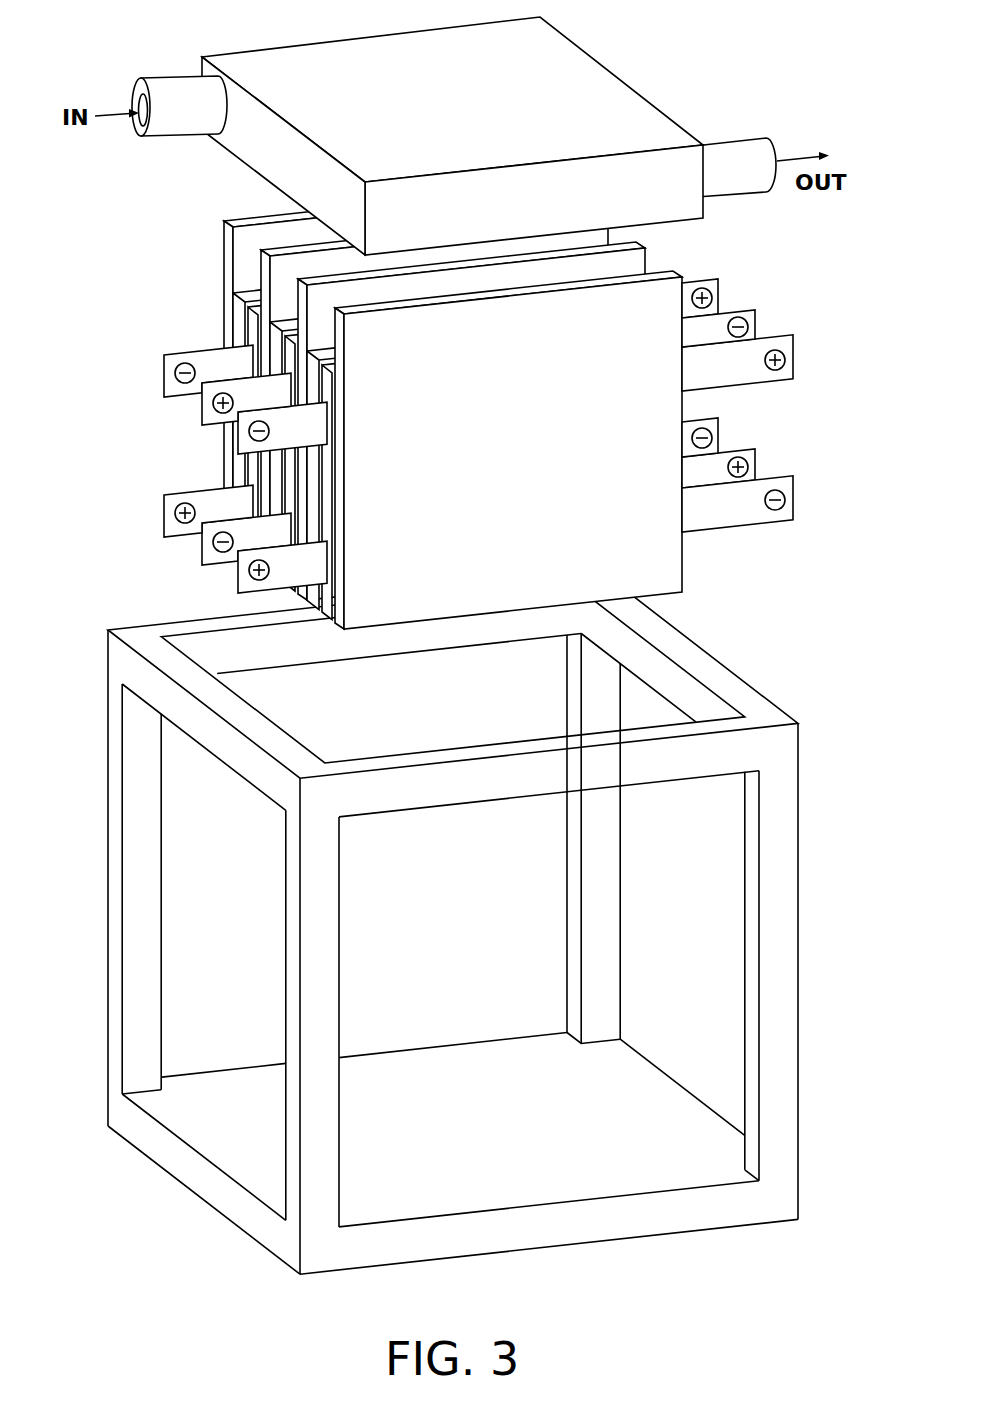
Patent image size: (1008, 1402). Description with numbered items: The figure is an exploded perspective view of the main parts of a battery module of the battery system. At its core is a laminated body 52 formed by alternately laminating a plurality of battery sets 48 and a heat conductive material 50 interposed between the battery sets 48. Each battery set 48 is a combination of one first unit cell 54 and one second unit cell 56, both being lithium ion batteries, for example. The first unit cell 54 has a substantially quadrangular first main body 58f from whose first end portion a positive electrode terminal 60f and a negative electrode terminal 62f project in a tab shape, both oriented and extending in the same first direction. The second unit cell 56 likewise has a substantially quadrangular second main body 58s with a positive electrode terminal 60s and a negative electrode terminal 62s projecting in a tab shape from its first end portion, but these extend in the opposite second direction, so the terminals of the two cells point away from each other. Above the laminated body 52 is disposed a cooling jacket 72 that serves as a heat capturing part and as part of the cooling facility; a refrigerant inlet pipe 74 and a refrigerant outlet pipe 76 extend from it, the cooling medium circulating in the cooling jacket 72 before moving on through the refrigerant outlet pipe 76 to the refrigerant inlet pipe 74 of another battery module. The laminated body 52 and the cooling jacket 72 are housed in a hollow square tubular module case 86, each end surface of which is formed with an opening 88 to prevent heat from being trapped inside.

The battery set 48 is at (148, 272).
The heat conductive material 50 is at (262, 280).
The laminated body 52 is at (722, 245).
The first unit cell 54 is at (245, 335).
The second unit cell 56 is at (238, 321).
The first main body 58f is at (332, 507).
The second main body 58s is at (315, 523).
The positive electrode terminal 60f is at (200, 408).
The positive electrode terminal 60s is at (720, 288).
The negative electrode terminal 62f is at (163, 373).
The negative electrode terminal 62s is at (757, 320).
The cooling jacket 72 is at (606, 88).
The refrigerant inlet pipe 74 is at (178, 90).
The refrigerant outlet pipe 76 is at (738, 148).
The module case 86 is at (718, 668).
The opening 88 is at (670, 672).